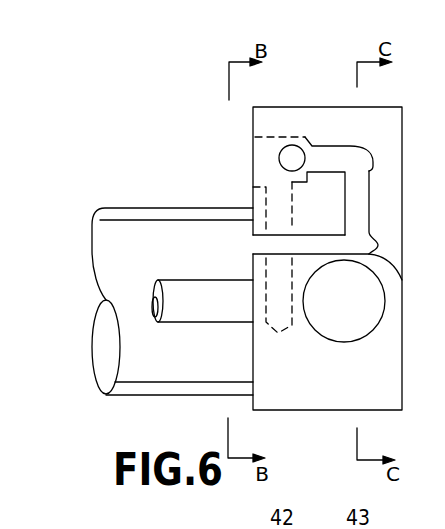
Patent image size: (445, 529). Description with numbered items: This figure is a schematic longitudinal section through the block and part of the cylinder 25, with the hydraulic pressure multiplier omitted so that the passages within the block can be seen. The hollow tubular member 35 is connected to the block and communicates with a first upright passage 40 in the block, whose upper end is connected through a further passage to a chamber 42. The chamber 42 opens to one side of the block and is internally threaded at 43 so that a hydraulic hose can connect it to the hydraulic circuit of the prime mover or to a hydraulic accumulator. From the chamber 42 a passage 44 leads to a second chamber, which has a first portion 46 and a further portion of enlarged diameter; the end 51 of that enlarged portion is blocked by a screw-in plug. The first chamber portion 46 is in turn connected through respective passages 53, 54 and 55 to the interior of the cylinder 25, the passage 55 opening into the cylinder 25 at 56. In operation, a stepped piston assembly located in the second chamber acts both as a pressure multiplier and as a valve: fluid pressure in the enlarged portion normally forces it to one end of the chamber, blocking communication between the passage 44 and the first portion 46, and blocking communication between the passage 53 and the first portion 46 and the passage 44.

The cylinder 25 is at (163, 386).
The hollow tubular member 35 is at (158, 280).
The first upright passage 40 is at (254, 189).
The chamber 42 is at (306, 135).
The internal thread 43 is at (268, 137).
The passage 44 is at (331, 173).
The first portion of second chamber 46 is at (365, 143).
The end of chamber portion 51 is at (349, 258).
The passage 53 is at (368, 195).
The passage 54 is at (402, 280).
The passage 55 is at (277, 237).
The opening of passage into cylinder 56 is at (247, 240).